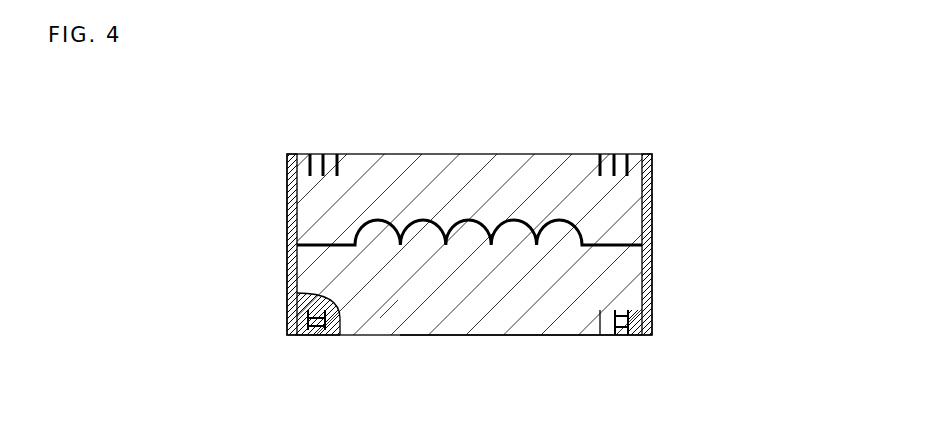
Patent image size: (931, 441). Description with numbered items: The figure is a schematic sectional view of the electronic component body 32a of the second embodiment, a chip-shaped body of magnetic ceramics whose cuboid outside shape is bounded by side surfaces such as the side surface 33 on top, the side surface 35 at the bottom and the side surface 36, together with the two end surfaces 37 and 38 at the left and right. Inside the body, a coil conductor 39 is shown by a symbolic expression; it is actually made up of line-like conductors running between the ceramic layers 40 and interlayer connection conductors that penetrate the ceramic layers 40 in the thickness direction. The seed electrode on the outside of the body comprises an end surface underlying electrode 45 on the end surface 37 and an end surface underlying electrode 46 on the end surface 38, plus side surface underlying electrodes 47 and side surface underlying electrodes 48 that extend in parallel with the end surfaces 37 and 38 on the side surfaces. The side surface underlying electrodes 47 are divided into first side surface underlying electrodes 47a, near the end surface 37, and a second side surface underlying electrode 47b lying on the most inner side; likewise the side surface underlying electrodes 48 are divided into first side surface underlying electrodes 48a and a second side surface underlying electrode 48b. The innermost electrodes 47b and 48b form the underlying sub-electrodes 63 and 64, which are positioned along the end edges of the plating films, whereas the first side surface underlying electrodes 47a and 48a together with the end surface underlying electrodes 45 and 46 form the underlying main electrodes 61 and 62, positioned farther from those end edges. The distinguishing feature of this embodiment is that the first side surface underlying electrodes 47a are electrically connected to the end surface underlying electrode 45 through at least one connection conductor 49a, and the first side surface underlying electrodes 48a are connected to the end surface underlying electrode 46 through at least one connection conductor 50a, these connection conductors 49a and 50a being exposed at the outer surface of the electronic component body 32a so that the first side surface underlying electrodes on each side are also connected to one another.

The side surface 33 is at (452, 153).
The coil conductor 39 is at (470, 221).
The ceramic layers 40 is at (613, 155).
The end surface 37 is at (290, 207).
The end surface 38 is at (652, 212).
The side surface underlying electrodes 47 is at (226, 308).
The second side surface underlying electrode 47b is at (254, 306).
The underlying sub-electrode 63 is at (300, 295).
The first side surface underlying electrodes 47a is at (310, 320).
The end surface underlying electrode 45 is at (305, 327).
The underlying main electrode 61 is at (214, 338).
The side surface underlying electrodes 48 is at (708, 310).
The second side surface underlying electrode 48b is at (685, 305).
The underlying sub-electrode 64 is at (650, 297).
The first side surface underlying electrodes 48a is at (640, 322).
The end surface underlying electrode 46 is at (650, 328).
The underlying main electrode 62 is at (768, 318).
The connection conductor 49a is at (303, 331).
The side surface 36 is at (390, 318).
The side surface 35 is at (459, 335).
The electronic component body 32a is at (520, 336).
The connection conductor 50a is at (617, 331).